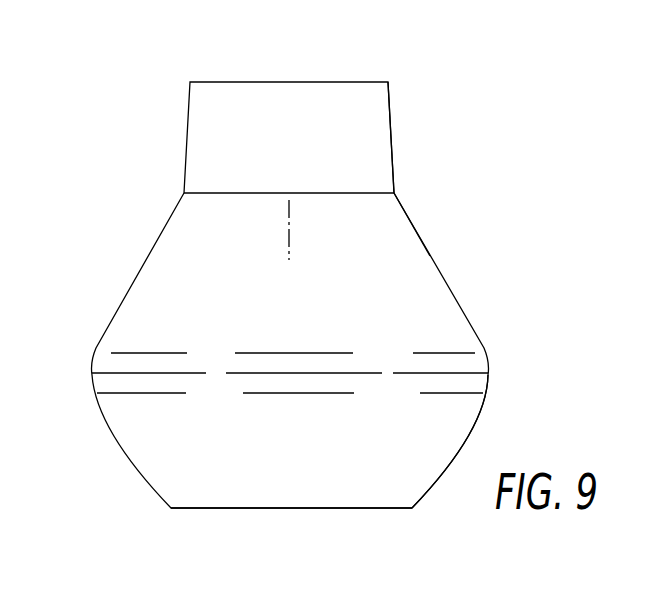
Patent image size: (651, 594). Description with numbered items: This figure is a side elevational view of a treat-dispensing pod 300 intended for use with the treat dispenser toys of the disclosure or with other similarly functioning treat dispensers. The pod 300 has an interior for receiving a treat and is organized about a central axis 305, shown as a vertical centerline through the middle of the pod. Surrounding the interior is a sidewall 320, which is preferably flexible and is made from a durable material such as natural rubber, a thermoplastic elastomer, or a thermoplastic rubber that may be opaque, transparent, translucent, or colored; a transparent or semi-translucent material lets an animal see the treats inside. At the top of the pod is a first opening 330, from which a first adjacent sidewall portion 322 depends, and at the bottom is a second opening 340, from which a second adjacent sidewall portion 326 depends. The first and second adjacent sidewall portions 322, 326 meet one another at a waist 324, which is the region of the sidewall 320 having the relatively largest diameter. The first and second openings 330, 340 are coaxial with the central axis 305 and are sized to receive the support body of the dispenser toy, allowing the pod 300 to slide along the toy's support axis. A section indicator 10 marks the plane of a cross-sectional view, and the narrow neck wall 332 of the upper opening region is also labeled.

The treat-dispensing pod 300 is at (118, 101).
The central axis 305 is at (289, 226).
The sidewall 320 is at (420, 278).
The first adjacent sidewall portion 322 is at (408, 214).
The waist 324 is at (488, 365).
The second adjacent sidewall portion 326 is at (470, 430).
The first opening 330 is at (220, 82).
The neck sidewall 332 is at (393, 112).
The second opening 340 is at (222, 508).
The section line 10- 10 is at (272, 27).